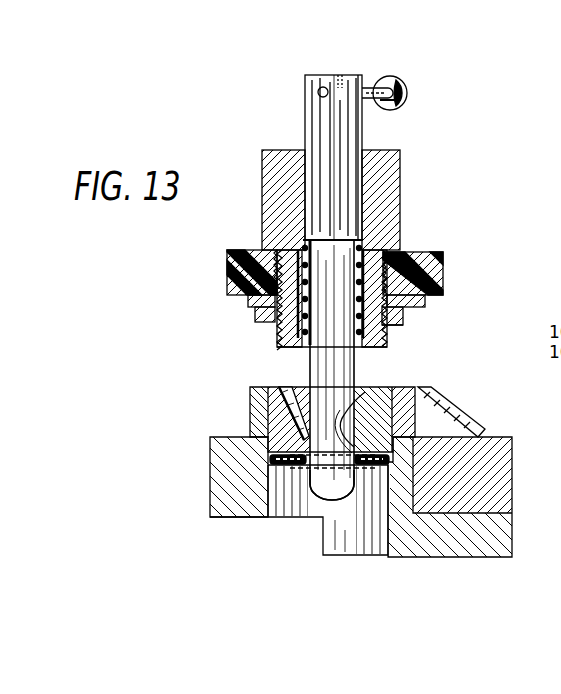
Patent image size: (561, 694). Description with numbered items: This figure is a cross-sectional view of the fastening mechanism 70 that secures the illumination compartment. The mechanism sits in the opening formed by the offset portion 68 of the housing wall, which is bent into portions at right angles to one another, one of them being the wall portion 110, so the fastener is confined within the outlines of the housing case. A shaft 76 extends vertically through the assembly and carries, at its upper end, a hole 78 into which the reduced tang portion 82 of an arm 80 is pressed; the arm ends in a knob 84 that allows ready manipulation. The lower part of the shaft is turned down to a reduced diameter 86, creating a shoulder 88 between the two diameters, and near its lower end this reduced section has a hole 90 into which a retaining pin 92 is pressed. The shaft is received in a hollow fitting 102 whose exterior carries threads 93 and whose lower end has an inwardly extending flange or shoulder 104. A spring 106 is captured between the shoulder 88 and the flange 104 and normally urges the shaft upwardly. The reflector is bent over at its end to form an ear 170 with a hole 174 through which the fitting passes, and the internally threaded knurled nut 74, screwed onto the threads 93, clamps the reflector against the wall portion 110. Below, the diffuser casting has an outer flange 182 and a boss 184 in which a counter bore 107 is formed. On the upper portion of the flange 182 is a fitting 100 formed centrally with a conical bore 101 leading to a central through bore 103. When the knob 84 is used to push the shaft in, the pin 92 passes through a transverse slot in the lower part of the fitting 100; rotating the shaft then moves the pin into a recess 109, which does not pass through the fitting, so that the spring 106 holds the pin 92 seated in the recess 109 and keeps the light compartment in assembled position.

The fastening mechanism 70 is at (262, 152).
The shaft 76 is at (347, 115).
The hole 78 is at (320, 88).
The arm 80 is at (372, 86).
The reduced tang portion 82 is at (340, 76).
The knob 84 is at (399, 84).
The reduced diameter lower portion of shaft 86 is at (335, 256).
The shoulder 88 is at (300, 248).
The offset portion of wall 68 is at (236, 258).
The fitting 102 is at (393, 160).
The wall portion 110 is at (422, 262).
The spring 106 is at (262, 300).
The ear 170 is at (420, 302).
The knurled nut 74 is at (404, 321).
The hole in ear 174 is at (405, 328).
The threads 93 is at (277, 330).
The flange or shoulder 104 is at (366, 345).
The fitting 100 is at (294, 397).
The conical bore 101 is at (350, 402).
The central through bore 103 is at (350, 432).
The retaining pin 92 is at (290, 452).
The outer flange 182 is at (217, 502).
The boss 184 is at (497, 537).
The counter bore 107 is at (283, 507).
The recess 109 is at (386, 466).
The hole 90 is at (338, 500).